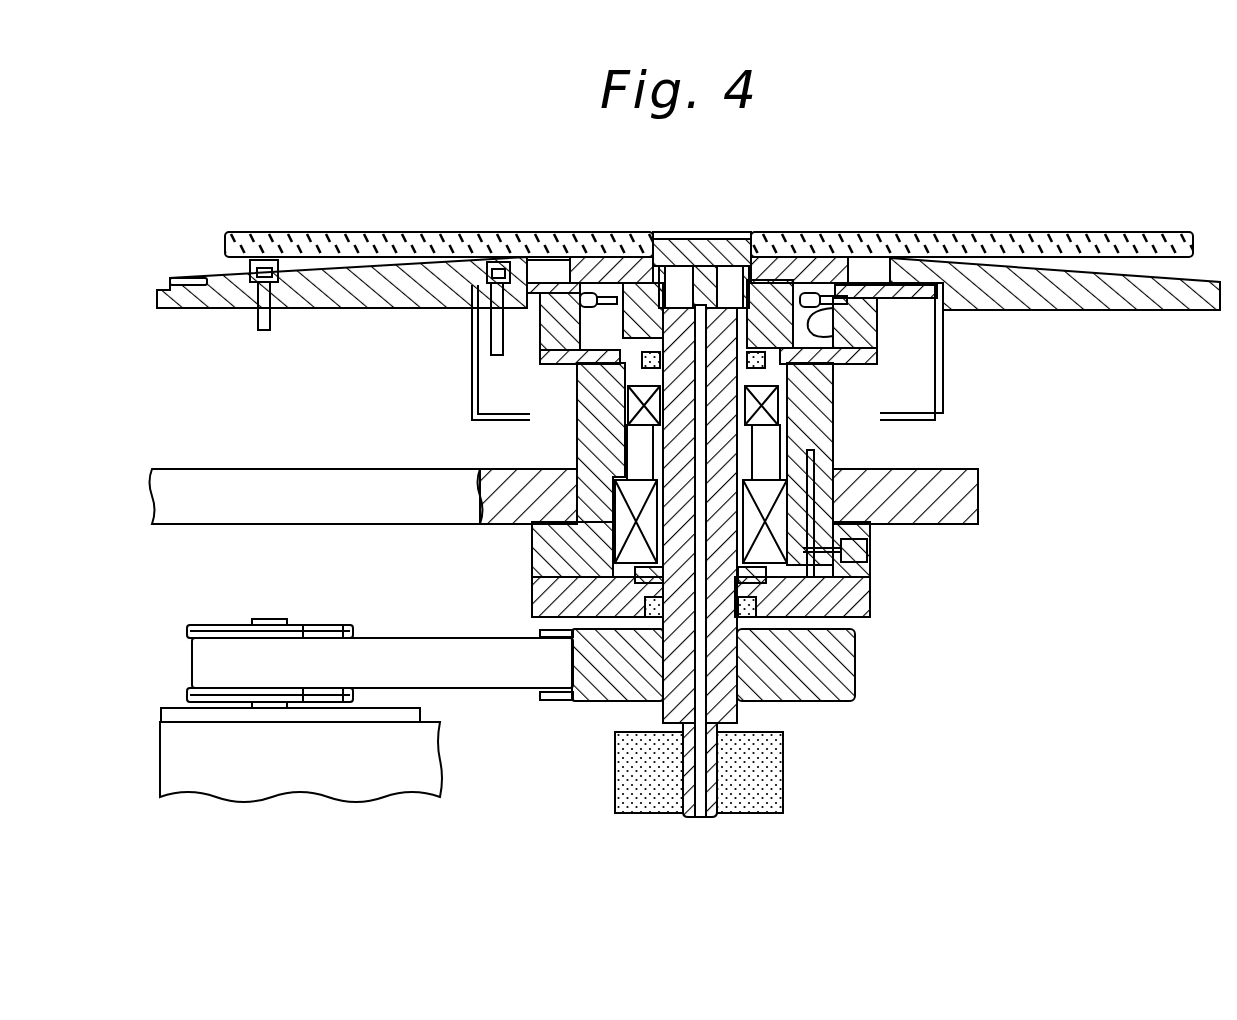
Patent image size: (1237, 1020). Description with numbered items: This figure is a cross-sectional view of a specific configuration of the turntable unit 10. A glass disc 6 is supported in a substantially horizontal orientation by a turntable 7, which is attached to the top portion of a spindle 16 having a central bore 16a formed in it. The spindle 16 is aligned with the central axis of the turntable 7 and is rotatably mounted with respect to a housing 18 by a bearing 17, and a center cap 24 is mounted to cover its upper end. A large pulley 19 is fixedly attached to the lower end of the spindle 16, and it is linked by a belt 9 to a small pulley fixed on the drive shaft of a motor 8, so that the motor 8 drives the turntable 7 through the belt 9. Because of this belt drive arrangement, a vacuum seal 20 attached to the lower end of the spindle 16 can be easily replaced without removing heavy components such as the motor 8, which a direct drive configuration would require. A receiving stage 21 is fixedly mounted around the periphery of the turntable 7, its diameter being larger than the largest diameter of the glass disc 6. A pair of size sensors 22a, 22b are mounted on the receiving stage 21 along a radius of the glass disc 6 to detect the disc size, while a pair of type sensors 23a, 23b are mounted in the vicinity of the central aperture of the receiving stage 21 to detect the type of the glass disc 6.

The turntable unit 10 is at (1138, 172).
The glass disc 6 is at (845, 232).
The turntable 7 is at (600, 257).
The center cap 24 is at (712, 239).
The spindle 16 is at (762, 445).
The central bore 16a is at (703, 683).
The bearing 17 is at (625, 410).
The housing 18 is at (531, 592).
The large pulley 19 is at (858, 660).
The vacuum seal 20 is at (783, 778).
The receiving stage 21 is at (1108, 305).
The size sensor 22a is at (250, 290).
The size sensor 22b is at (490, 292).
The type sensor 23a is at (560, 332).
The type sensor 23b is at (877, 332).
The belt 9 is at (404, 637).
The motor 8 is at (445, 768).